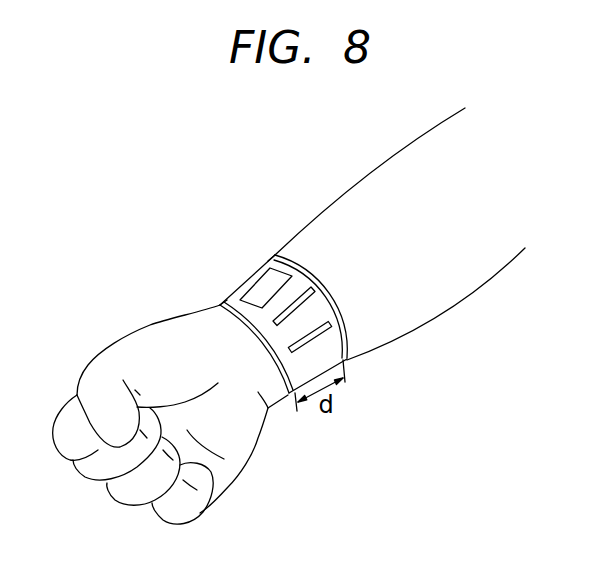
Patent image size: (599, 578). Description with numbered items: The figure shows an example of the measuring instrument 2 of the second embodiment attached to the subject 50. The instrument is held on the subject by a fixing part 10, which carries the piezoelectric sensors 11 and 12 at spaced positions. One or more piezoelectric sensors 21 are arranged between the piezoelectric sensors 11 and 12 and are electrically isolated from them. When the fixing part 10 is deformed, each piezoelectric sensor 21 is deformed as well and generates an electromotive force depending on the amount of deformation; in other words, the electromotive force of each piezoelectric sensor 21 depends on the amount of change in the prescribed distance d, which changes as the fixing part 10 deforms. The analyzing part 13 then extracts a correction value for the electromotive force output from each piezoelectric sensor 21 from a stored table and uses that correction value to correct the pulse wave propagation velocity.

The measuring instrument 2 is at (283, 241).
The fixing part 10 is at (326, 347).
The piezoelectric sensor 11 is at (272, 252).
The piezoelectric sensor 12 is at (220, 301).
The analyzing part 13 is at (265, 285).
The piezoelectric sensor 21 is at (317, 318).
The subject 50 is at (398, 178).